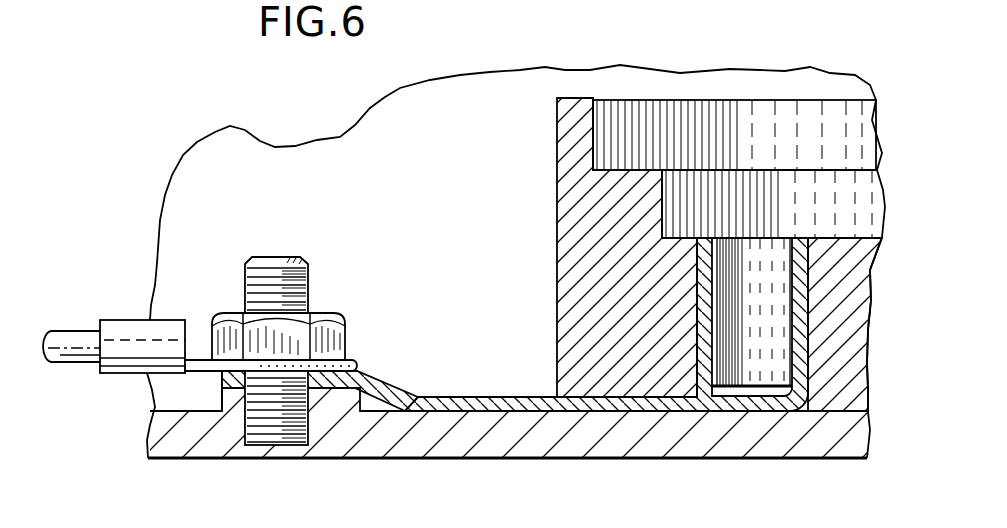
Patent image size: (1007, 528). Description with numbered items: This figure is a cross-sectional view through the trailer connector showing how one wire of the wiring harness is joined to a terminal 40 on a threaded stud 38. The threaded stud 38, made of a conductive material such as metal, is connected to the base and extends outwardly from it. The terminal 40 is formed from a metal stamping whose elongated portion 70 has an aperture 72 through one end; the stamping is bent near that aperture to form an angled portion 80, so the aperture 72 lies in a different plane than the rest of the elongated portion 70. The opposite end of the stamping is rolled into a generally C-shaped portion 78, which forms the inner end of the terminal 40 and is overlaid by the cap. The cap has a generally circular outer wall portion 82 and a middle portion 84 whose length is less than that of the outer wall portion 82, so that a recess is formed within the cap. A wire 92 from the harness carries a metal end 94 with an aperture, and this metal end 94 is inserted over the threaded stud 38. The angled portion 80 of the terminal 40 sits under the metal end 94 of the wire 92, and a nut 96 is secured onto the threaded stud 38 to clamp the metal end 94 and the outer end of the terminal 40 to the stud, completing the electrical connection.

The threaded stud 38 is at (308, 280).
The terminal 40 is at (480, 396).
The elongated portion 70 is at (522, 407).
The aperture 72 is at (245, 373).
The C-shaped portion 78 is at (808, 313).
The angled portion 80 is at (397, 393).
The outer wall portion 82 is at (568, 118).
The middle portion 84 is at (617, 195).
The wire 92 is at (78, 365).
The metal end 94 is at (202, 360).
The nut 96 is at (337, 332).